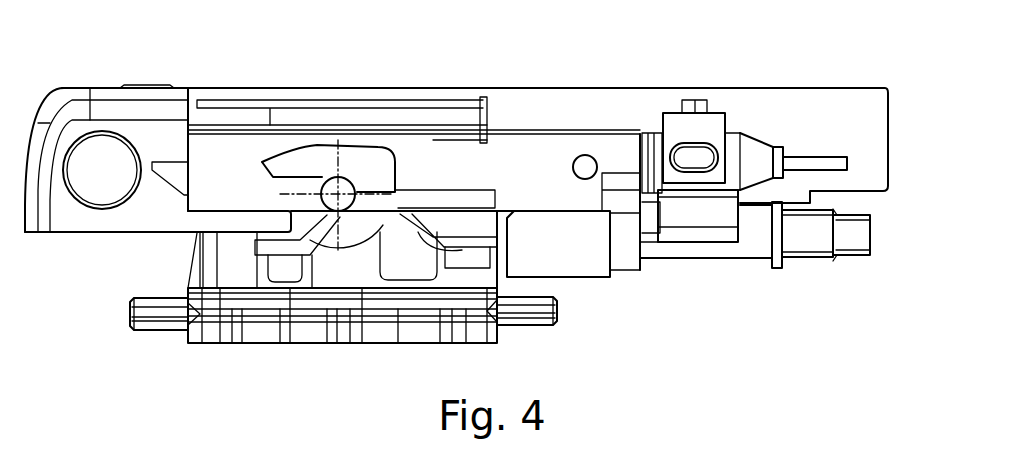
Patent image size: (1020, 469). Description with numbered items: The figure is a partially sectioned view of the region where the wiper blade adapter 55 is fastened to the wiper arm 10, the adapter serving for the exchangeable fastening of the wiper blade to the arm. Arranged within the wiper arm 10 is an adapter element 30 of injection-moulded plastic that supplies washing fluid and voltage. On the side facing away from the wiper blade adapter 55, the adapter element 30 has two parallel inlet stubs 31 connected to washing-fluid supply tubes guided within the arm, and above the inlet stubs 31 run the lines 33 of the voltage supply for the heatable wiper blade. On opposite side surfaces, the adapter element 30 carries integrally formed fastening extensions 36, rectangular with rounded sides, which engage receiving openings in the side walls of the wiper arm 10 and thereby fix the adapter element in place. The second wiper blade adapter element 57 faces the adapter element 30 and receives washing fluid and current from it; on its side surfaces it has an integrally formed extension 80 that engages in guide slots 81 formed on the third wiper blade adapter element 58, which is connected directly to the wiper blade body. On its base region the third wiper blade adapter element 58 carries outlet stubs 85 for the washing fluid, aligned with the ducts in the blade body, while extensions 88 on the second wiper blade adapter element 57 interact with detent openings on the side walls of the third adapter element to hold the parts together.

The wiper arm 10 is at (865, 84).
The adapter element 30 is at (705, 229).
The inlet stubs 31 is at (815, 243).
The lines 33 is at (835, 162).
The fastening extensions 36 is at (703, 155).
The wiper blade adapter 55 is at (113, 79).
The second wiper blade adapter element 57 is at (118, 223).
The third wiper blade adapter element 58 is at (343, 333).
The extension 80 is at (348, 187).
The guide slots 81 is at (371, 160).
The outlet stubs 85 is at (163, 323).
The extensions 88 is at (585, 165).